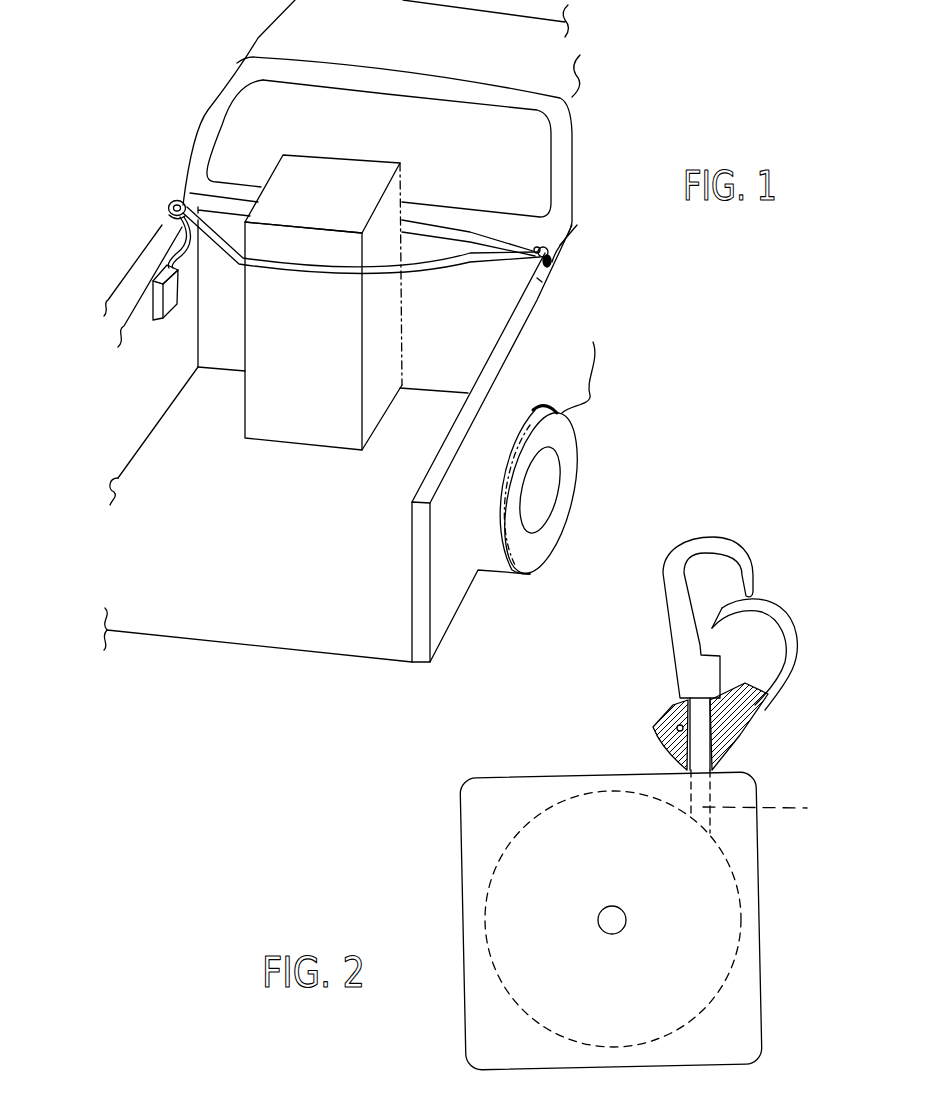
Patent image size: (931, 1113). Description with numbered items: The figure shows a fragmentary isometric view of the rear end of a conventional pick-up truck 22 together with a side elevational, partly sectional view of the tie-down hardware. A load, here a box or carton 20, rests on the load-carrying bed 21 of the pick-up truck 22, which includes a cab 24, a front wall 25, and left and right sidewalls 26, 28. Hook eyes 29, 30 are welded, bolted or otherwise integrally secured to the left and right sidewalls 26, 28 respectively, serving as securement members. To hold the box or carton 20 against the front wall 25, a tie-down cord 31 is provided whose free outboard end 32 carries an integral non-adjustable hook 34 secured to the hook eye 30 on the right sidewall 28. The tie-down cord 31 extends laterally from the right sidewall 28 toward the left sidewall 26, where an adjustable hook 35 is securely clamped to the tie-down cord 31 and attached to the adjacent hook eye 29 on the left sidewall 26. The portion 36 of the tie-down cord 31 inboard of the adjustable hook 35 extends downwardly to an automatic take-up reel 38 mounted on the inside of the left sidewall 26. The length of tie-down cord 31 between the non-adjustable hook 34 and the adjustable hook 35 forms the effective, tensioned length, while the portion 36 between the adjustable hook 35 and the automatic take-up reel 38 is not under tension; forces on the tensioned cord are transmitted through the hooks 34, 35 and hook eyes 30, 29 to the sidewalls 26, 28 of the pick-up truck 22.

In FIG. 1, the box or carton 20 is at (365, 192).
In FIG. 1, the load-carrying bed 21 is at (272, 533).
In FIG. 1, the pick-up truck 22 is at (617, 132).
In FIG. 1, the cab 24 is at (258, 38).
In FIG. 1, the front wall 25 is at (480, 293).
In FIG. 1, the left sidewall 26 is at (130, 332).
In FIG. 1, the right sidewall 28 is at (520, 365).
In FIG. 1, the hook eye 29 is at (177, 200).
In FIG. 1, the hook eye 30 is at (552, 260).
In FIG. 1, the tie-down cord 31 is at (413, 268).
In FIG. 2, the tie-down cord 31 is at (697, 751).
In FIG. 1, the free outboard end 32 is at (532, 248).
In FIG. 1, the non-adjustable hook 34 is at (560, 247).
In FIG. 2, the non-adjustable hook 34 is at (667, 592).
In FIG. 1, the adjustable hook 35 is at (166, 215).
In FIG. 2, the adjustable hook 35 is at (777, 670).
In FIG. 1, the portion of the tie-down cord 36 is at (184, 247).
In FIG. 2, the portion of the tie-down cord 36 is at (775, 806).
In FIG. 1, the automatic take-up reel 38 is at (161, 326).
In FIG. 2, the automatic take-up reel 38 is at (508, 744).